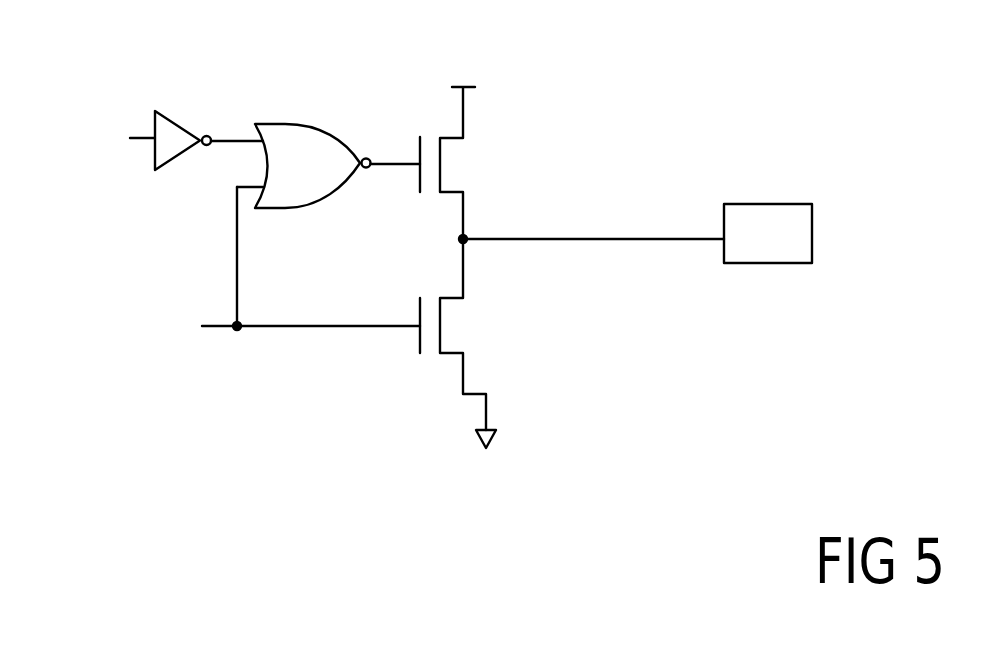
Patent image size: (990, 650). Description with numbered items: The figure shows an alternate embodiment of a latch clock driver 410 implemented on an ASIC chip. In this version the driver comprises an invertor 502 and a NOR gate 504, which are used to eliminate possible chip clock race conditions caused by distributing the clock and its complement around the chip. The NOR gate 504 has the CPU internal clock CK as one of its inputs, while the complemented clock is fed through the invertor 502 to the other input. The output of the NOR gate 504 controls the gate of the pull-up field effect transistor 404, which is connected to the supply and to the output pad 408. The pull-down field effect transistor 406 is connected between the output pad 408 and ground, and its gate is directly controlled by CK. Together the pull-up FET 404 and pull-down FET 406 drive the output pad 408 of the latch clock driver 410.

The invertor 502 is at (155, 120).
The NOR gate 504 is at (336, 178).
The pull-up field effect transistor 404 is at (447, 159).
The pull-down field effect transistor 406 is at (450, 334).
The output pad 408 is at (770, 203).
The latch clock driver 410 is at (333, 408).